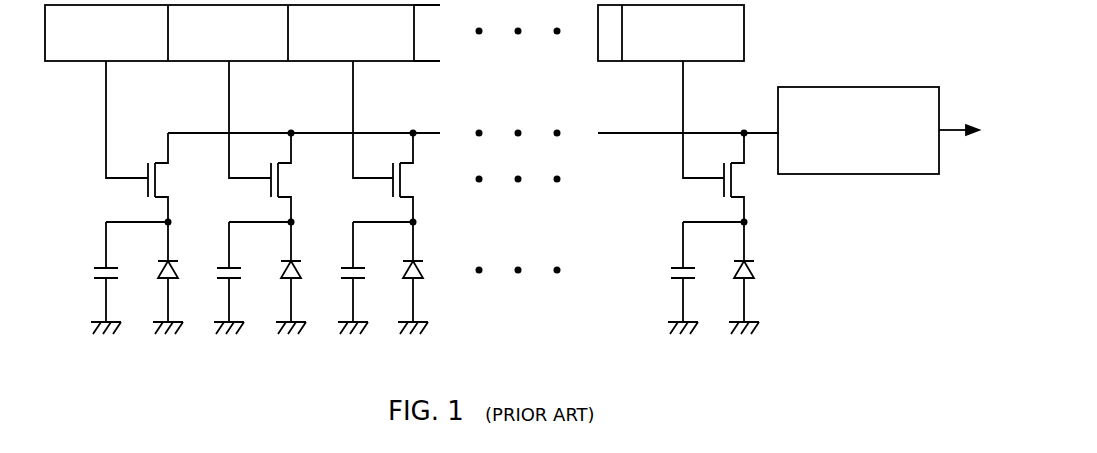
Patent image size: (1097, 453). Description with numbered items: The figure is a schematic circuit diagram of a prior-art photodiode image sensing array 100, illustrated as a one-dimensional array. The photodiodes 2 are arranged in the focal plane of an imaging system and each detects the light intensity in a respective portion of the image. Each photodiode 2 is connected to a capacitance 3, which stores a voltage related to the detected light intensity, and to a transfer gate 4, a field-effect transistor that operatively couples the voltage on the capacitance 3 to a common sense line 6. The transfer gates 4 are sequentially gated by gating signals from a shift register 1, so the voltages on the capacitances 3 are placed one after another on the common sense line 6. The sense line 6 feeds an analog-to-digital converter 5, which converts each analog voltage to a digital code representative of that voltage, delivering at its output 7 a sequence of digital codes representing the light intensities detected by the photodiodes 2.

The shift register 1 is at (745, 27).
The photodiode 2 is at (748, 280).
The capacitance 3 is at (677, 266).
The transfer gate 4 is at (735, 172).
The analog-to-digital (A/D) converter 5 is at (858, 87).
The common sense line 6 is at (381, 132).
The output terminal 7 is at (948, 128).
The photodiode image sensing array 100 is at (512, 191).